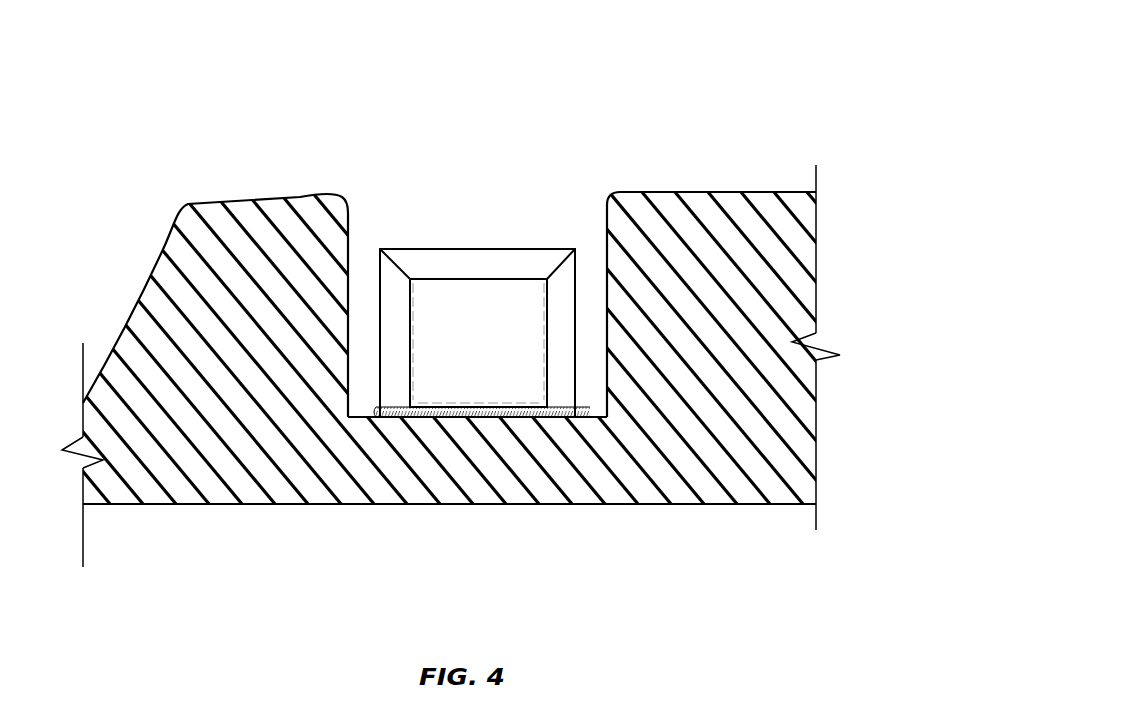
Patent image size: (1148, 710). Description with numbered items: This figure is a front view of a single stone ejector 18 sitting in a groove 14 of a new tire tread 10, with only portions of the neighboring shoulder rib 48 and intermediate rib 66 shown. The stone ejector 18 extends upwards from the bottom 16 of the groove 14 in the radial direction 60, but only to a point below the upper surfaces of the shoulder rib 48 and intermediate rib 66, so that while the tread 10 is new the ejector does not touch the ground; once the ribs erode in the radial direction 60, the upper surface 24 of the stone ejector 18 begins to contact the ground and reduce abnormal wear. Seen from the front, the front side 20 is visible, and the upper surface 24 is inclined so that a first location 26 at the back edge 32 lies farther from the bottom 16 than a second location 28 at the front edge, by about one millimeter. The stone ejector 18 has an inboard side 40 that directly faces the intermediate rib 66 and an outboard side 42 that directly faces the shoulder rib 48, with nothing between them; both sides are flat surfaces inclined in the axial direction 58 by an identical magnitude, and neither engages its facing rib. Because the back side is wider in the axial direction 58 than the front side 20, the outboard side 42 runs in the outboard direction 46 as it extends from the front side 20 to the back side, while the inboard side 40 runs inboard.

The tread 10 is at (764, 70).
The groove 14 is at (577, 194).
The bottom 16 is at (598, 408).
The stone ejector 18 is at (463, 246).
The front side 20 is at (480, 391).
The upper surface 24 is at (486, 262).
The first location 26 is at (412, 246).
The second location 28 is at (522, 283).
The back edge 32 is at (520, 246).
The inboard side 40 is at (565, 352).
The outboard side 42 is at (395, 347).
The outboard direction 46 is at (326, 140).
The shoulder rib 48 is at (177, 245).
The axial direction 58 is at (321, 553).
The radial direction 60 is at (867, 429).
The intermediate rib 66 is at (737, 206).